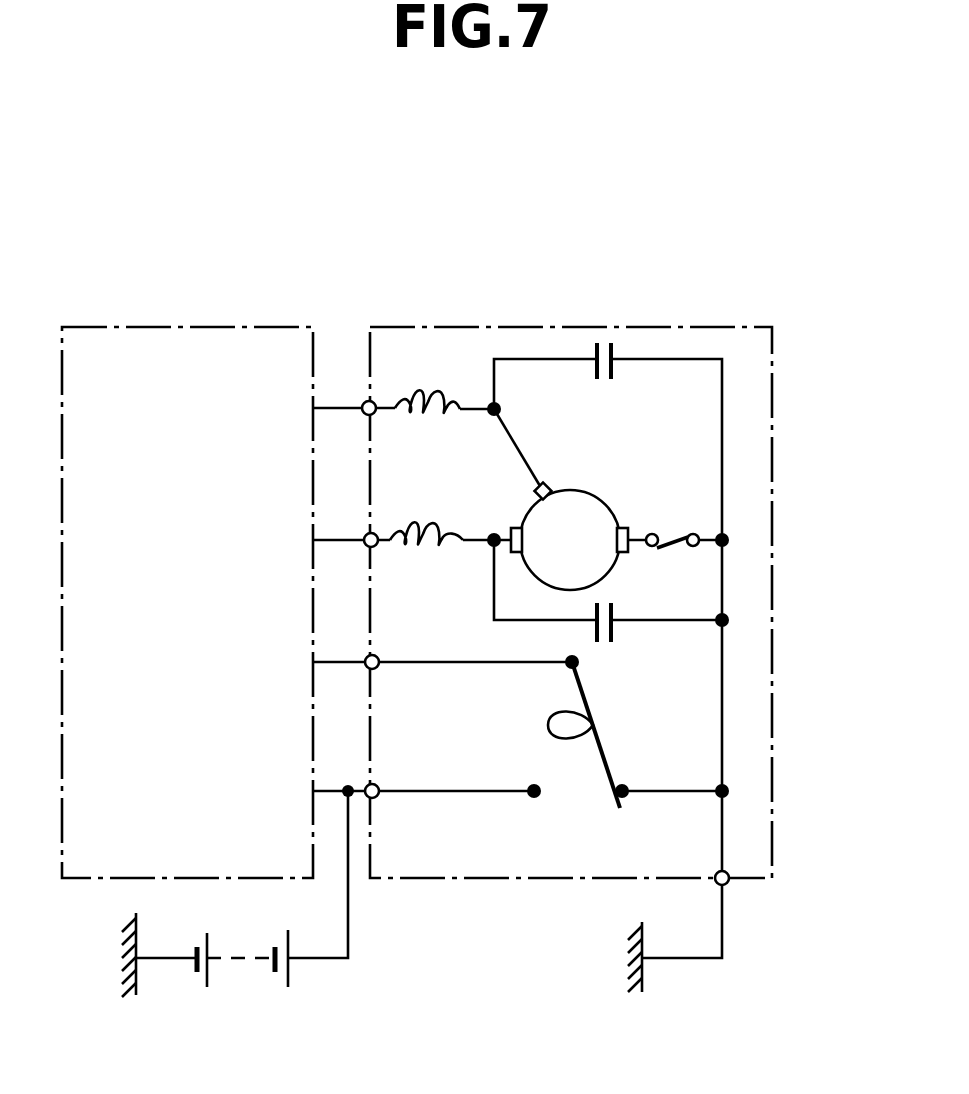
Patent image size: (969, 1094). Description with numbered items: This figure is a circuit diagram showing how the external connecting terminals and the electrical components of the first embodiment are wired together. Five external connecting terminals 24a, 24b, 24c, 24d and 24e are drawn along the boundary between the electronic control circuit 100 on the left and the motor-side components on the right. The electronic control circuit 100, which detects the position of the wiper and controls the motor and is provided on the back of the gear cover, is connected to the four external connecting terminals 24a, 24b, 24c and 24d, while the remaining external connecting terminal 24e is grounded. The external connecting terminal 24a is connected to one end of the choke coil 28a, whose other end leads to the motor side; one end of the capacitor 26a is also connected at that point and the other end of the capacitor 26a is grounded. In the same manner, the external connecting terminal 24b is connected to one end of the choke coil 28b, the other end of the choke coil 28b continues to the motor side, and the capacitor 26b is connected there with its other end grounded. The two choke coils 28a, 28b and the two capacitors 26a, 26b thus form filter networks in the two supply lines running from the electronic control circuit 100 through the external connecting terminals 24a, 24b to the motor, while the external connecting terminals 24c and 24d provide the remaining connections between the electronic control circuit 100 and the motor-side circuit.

The electronic control circuit 100 is at (200, 326).
The external connecting terminal 24a is at (367, 399).
The external connecting terminal 24b is at (375, 532).
The external connecting terminal 24c is at (375, 798).
The external connecting terminal 24d is at (377, 668).
The external connecting terminal 24e is at (727, 884).
The choke coil 28a is at (425, 398).
The choke coil 28b is at (455, 528).
The capacitor 26a is at (614, 345).
The capacitor 26b is at (616, 612).